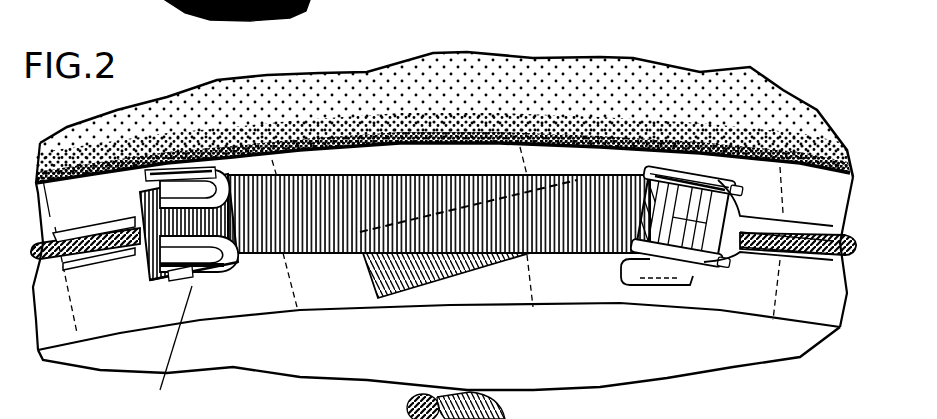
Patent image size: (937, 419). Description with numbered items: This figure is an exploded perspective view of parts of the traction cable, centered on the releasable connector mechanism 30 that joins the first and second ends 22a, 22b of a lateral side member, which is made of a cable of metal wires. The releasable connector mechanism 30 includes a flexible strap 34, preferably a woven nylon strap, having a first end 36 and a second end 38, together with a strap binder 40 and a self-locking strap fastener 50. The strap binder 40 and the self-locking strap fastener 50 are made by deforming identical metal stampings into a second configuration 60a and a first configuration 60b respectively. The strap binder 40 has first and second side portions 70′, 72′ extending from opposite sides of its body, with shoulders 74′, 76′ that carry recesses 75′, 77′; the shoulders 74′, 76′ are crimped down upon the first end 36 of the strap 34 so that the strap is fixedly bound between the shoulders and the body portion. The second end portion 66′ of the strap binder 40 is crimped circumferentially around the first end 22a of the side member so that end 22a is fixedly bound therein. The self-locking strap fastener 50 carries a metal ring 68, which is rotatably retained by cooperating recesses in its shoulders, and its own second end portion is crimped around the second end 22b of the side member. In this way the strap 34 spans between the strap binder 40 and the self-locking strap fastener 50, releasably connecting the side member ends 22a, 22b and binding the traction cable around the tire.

The releasable connector mechanism 30 is at (357, 167).
The flexible strap 34 is at (438, 178).
The first end of the strap 36 is at (190, 202).
The second end of the strap 38 is at (376, 272).
The strap binder 40 is at (168, 351).
The self-locking strap fastener 50 is at (708, 211).
The first end of the side member 22a is at (47, 228).
The second end of the side member 22b is at (833, 262).
The second configuration of the metal stamping 60a is at (229, 268).
The first configuration of the metal stamping 60b is at (715, 277).
The second end portion of the strap binder 66′ is at (100, 257).
The metal ring 68 is at (667, 153).
The first side portion of the strap binder 70′ is at (215, 268).
The second side portion of the strap binder 72′ is at (186, 167).
The shoulder of the strap binder first side portion 74′ is at (213, 167).
The recess of the strap binder shoulder 75′ is at (180, 177).
The shoulder of the strap binder second side portion 76′ is at (240, 267).
The recess of the strap binder shoulder 77′ is at (163, 273).